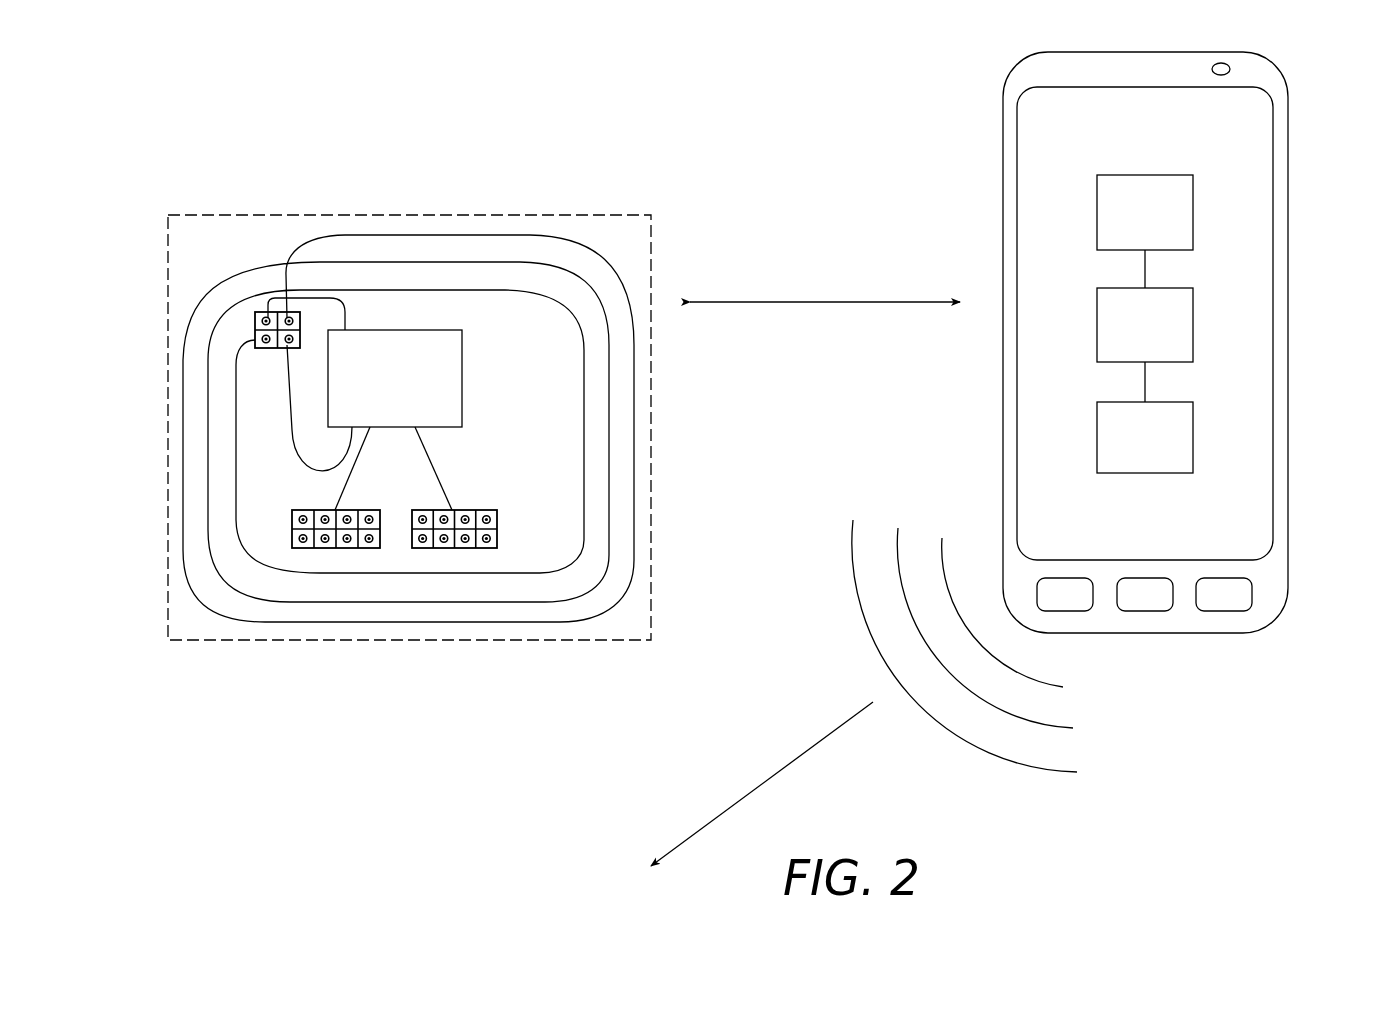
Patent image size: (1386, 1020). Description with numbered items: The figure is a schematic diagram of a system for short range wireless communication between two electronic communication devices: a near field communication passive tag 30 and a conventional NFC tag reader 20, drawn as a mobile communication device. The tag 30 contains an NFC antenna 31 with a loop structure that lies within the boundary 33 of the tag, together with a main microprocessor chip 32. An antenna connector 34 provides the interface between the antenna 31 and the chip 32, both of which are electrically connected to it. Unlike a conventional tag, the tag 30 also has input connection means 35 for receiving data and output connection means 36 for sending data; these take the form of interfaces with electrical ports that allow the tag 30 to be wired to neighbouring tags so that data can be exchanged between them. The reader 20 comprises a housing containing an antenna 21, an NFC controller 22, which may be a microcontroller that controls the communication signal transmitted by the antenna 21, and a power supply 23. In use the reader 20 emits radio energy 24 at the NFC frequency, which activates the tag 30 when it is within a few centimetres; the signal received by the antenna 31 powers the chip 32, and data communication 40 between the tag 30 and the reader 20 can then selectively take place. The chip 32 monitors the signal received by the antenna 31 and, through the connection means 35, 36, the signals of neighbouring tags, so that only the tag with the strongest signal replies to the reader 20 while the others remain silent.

The NFC tag reader 20 is at (1178, 342).
The antenna 21 is at (1145, 212).
The NFC controller 22 is at (1145, 325).
The power supply 23 is at (1145, 437).
The radio energy 24 is at (733, 741).
The NFC passive tag 30 is at (190, 666).
The NFC antenna 31 is at (426, 236).
The main microprocessor chip 32 is at (462, 344).
The boundary 33 is at (631, 213).
The antenna connector 34 is at (263, 349).
The input connection means 35 is at (300, 508).
The output connection means 36 is at (498, 522).
The data communication 40 is at (828, 196).